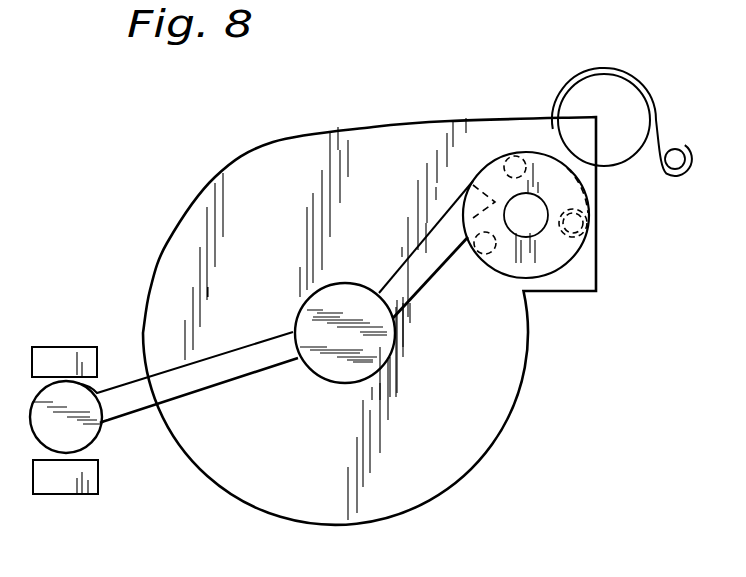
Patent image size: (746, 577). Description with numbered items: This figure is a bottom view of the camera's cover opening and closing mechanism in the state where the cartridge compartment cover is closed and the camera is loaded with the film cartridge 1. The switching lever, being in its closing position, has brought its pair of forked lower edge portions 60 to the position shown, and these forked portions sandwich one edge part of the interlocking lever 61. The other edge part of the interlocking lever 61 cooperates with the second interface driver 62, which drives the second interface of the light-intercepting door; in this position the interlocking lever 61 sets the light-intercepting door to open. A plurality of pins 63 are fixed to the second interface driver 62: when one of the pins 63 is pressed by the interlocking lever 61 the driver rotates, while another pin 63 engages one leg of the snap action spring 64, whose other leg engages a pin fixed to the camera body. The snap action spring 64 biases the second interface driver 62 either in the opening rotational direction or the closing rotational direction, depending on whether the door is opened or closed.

The film cartridge 1 is at (223, 200).
The forked lower edge portions 60 is at (53, 359).
The interlocking lever 61 is at (137, 402).
The second interface driver 62 is at (555, 258).
The pins 63 is at (510, 158).
The snap action spring 64 is at (583, 72).